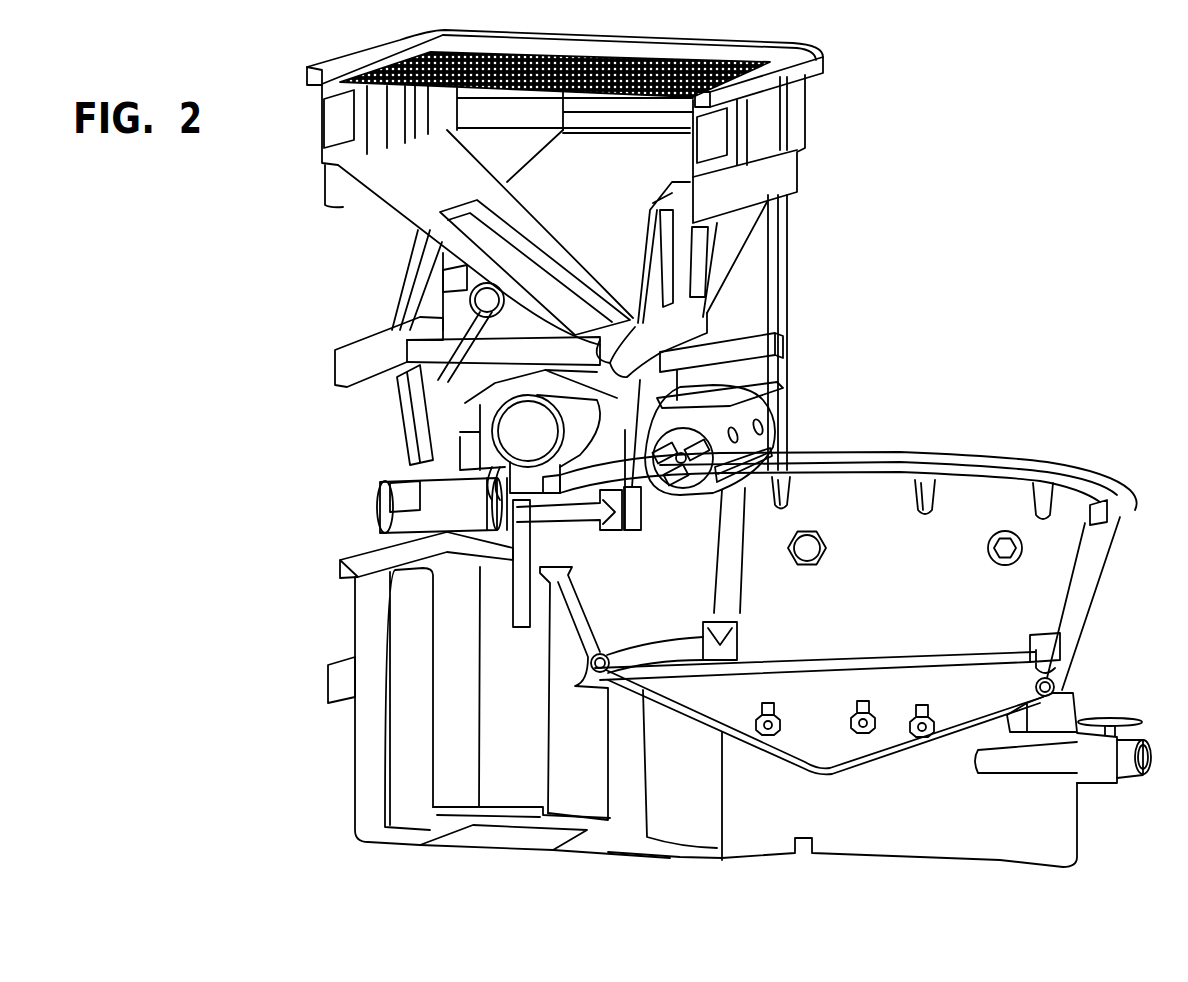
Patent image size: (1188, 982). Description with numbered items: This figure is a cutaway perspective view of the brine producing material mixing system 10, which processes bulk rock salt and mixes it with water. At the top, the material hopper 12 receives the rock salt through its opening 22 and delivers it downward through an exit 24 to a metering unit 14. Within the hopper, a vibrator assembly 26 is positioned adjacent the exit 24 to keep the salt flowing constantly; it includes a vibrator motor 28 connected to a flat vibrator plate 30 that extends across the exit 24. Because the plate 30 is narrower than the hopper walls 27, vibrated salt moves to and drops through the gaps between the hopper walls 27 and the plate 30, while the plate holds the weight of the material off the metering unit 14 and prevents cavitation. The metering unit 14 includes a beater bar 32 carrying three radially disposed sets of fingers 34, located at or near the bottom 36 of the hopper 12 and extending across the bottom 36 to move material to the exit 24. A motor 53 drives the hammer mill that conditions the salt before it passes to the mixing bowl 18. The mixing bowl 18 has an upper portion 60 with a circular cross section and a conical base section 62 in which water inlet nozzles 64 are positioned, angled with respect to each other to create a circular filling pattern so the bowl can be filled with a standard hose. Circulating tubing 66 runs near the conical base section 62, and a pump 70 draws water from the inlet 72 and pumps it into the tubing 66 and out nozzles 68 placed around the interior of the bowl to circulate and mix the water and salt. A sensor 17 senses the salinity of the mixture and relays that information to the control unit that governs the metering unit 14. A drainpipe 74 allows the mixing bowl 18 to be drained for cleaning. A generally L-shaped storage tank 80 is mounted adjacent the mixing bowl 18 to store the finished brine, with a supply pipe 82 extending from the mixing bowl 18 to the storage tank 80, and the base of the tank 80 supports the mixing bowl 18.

The material mixing system 10 is at (363, 245).
The material hopper 12 is at (748, 147).
The metering unit 14 is at (683, 338).
The sensor 17 is at (1023, 545).
The mixing bowl 18 is at (893, 520).
The opening 22 is at (395, 70).
The exit 24 is at (643, 445).
The vibrator assembly 26 is at (582, 307).
The hopper walls 27 is at (600, 207).
The vibrator motor 28 is at (485, 298).
The vibrator plate 30 is at (575, 342).
The beater bar 32 is at (660, 360).
The fingers 34 is at (670, 372).
The bottom of the hopper 36 is at (458, 412).
The motor 53 is at (513, 423).
The upper portion 60 is at (1090, 607).
The conical base section 62 is at (987, 690).
The water inlet nozzles 64 is at (920, 705).
The circulating tubing 66 is at (660, 690).
The nozzles 68 is at (1043, 637).
The pump 70 is at (447, 508).
The inlet 72 is at (823, 540).
The drainpipe 74 is at (1047, 765).
The storage tank 80 is at (353, 627).
The supply pipe 82 is at (518, 583).